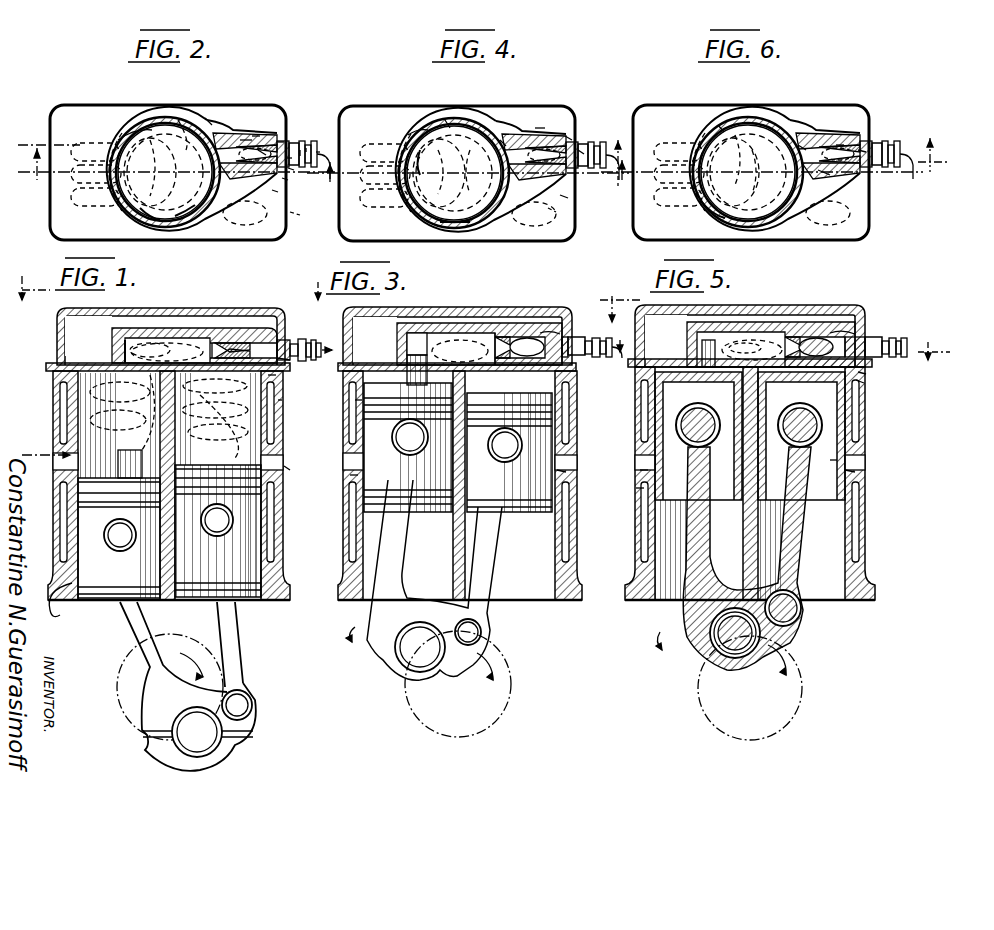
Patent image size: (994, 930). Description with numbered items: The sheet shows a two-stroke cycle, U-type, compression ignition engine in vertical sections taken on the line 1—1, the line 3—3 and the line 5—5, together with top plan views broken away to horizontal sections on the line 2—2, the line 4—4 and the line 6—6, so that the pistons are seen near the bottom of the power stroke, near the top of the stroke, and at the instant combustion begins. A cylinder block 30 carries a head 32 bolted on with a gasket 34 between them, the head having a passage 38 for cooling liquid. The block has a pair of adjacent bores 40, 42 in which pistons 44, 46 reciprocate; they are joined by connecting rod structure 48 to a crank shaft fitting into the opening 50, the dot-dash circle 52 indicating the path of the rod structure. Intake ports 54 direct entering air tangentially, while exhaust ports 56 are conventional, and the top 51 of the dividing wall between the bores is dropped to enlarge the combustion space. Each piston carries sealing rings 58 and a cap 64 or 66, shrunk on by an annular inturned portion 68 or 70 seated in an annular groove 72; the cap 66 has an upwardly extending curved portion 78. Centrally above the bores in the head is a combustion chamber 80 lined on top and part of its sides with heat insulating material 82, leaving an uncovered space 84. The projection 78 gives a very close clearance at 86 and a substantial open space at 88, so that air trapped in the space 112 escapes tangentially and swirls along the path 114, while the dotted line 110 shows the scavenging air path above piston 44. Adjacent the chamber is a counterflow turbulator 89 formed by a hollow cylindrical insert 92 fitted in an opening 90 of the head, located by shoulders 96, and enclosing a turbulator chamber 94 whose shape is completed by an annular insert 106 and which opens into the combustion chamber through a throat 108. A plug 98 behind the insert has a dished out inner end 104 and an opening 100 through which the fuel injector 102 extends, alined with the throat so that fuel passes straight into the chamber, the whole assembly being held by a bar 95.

In FIG. 2, the section line 1 is at (49, 174).
In FIG. 1, the section line 2 is at (177, 308).
In FIG. 2, the section line 3 is at (328, 177).
In FIG. 4, the section line 3 is at (616, 157).
In FIG. 1, the section line 4 is at (315, 294).
In FIG. 3, the section line 4 is at (620, 339).
In FIG. 4, the section line 5 is at (616, 188).
In FIG. 6, the section line 5 is at (784, 169).
In FIG. 3, the section line 6 is at (620, 301).
In FIG. 5, the section line 6 is at (934, 344).
In FIG. 1, the cylinder block 30 is at (286, 480).
In FIG. 2, the head 32 is at (62, 118).
In FIG. 4, the head 32 is at (355, 115).
In FIG. 1, the head 32 is at (280, 308).
In FIG. 1, the gasket 34 is at (46, 367).
In FIG. 1, the passage 38 is at (80, 325).
In FIG. 1, the bore 40 is at (290, 553).
In FIG. 1, the bore 42 is at (62, 604).
In FIG. 1, the piston 44 is at (250, 520).
In FIG. 3, the piston 44 is at (530, 444).
In FIG. 5, the piston 44 is at (830, 456).
In FIG. 1, the piston 46 is at (90, 520).
In FIG. 3, the piston 46 is at (372, 416).
In FIG. 5, the piston 46 is at (665, 470).
In FIG. 1, the connecting rod structure 48 is at (150, 705).
In FIG. 3, the connecting rod structure 48 is at (385, 618).
In FIG. 5, the connecting rod structure 48 is at (692, 615).
In FIG. 1, the opening 50 is at (220, 740).
In FIG. 3, the opening 50 is at (410, 652).
In FIG. 5, the opening 50 is at (730, 645).
In FIG. 1, the top of dividing wall portion 51 is at (165, 380).
In FIG. 1, the dot-dash circle 52 is at (205, 642).
In FIG. 4, the intake ports 54 is at (570, 198).
In FIG. 1, the intake ports 54 is at (286, 466).
In FIG. 3, the intake ports 54 is at (566, 470).
In FIG. 5, the intake ports 54 is at (858, 474).
In FIG. 2, the exhaust ports 56 is at (300, 216).
In FIG. 4, the exhaust ports 56 is at (580, 212).
In FIG. 1, the exhaust ports 56 is at (60, 470).
In FIG. 3, the exhaust ports 56 is at (580, 505).
In FIG. 5, the exhaust ports 56 is at (645, 482).
In FIG. 3, the sealing rings 58 is at (580, 395).
In FIG. 5, the sealing rings 58 is at (866, 392).
In FIG. 5, the cap 64 is at (866, 373).
In FIG. 3, the cap 66 is at (582, 368).
In FIG. 5, the cap 66 is at (635, 366).
In FIG. 5, the annular inturned portion 68 is at (862, 382).
In FIG. 5, the annular inturned portion 70 is at (698, 486).
In FIG. 5, the annular groove 72 is at (801, 486).
In FIG. 2, the curved portion 78 is at (156, 218).
In FIG. 4, the curved portion 78 is at (420, 152).
In FIG. 6, the curved portion 78 is at (700, 202).
In FIG. 1, the curved portion 78 is at (130, 452).
In FIG. 3, the curved portion 78 is at (428, 360).
In FIG. 5, the curved portion 78 is at (696, 358).
In FIG. 2, the combustion chamber 80 is at (150, 138).
In FIG. 1, the combustion chamber 80 is at (180, 345).
In FIG. 2, the heat insulating material 82 is at (182, 120).
In FIG. 4, the heat insulating material 82 is at (450, 122).
In FIG. 6, the heat insulating material 82 is at (720, 126).
In FIG. 3, the heat insulating material 82 is at (495, 365).
In FIG. 2, the space 84 is at (135, 150).
In FIG. 4, the space 84 is at (412, 138).
In FIG. 6, the space 84 is at (700, 140).
In FIG. 1, the space 84 is at (130, 345).
In FIG. 3, the space 84 is at (415, 333).
In FIG. 4, the close clearance 86 is at (437, 150).
In FIG. 3, the close clearance 86 is at (408, 447).
In FIG. 5, the close clearance 86 is at (716, 345).
In FIG. 2, the open space 88 is at (185, 215).
In FIG. 4, the open space 88 is at (440, 212).
In FIG. 6, the open space 88 is at (700, 215).
In FIG. 2, the counterflow turbulator 89 is at (256, 134).
In FIG. 4, the counterflow turbulator 89 is at (540, 128).
In FIG. 6, the counterflow turbulator 89 is at (826, 175).
In FIG. 3, the counterflow turbulator 89 is at (545, 334).
In FIG. 5, the counterflow turbulator 89 is at (840, 334).
In FIG. 2, the opening 90 is at (263, 148).
In FIG. 1, the opening 90 is at (240, 343).
In FIG. 2, the insert 92 is at (290, 150).
In FIG. 4, the insert 92 is at (503, 142).
In FIG. 1, the insert 92 is at (218, 419).
In FIG. 3, the insert 92 is at (519, 347).
In FIG. 5, the insert 92 is at (812, 340).
In FIG. 2, the turbulator chamber 94 is at (245, 140).
In FIG. 1, the turbulator chamber 94 is at (280, 376).
In FIG. 2, the bar 95 is at (316, 146).
In FIG. 1, the bar 95 is at (308, 340).
In FIG. 3, the bar 95 is at (604, 336).
In FIG. 5, the bar 95 is at (900, 338).
In FIG. 2, the shoulders 96 is at (278, 192).
In FIG. 1, the shoulders 96 is at (262, 358).
In FIG. 2, the plug 98 is at (292, 168).
In FIG. 4, the plug 98 is at (568, 138).
In FIG. 2, the opening 100 is at (305, 148).
In FIG. 4, the opening 100 is at (584, 150).
In FIG. 2, the fuel injector 102 is at (312, 146).
In FIG. 2, the dished out portion 104 is at (284, 180).
In FIG. 6, the dished out portion 104 is at (866, 150).
In FIG. 1, the dished out portion 104 is at (290, 360).
In FIG. 2, the annular insert 106 is at (281, 140).
In FIG. 6, the annular insert 106 is at (840, 145).
In FIG. 1, the annular insert 106 is at (290, 340).
In FIG. 5, the annular insert 106 is at (868, 336).
In FIG. 2, the throat 108 is at (210, 120).
In FIG. 4, the throat 108 is at (483, 128).
In FIG. 6, the throat 108 is at (800, 145).
In FIG. 1, the throat 108 is at (216, 342).
In FIG. 4, the dotted line 110 is at (455, 224).
In FIG. 1, the dotted line 110 is at (282, 460).
In FIG. 3, the space 112 is at (384, 362).
In FIG. 6, the arrow and dotted line 114 is at (738, 135).
In FIG. 3, the arrow and dotted line 114 is at (490, 345).
In FIG. 5, the arrow and dotted line 114 is at (760, 345).